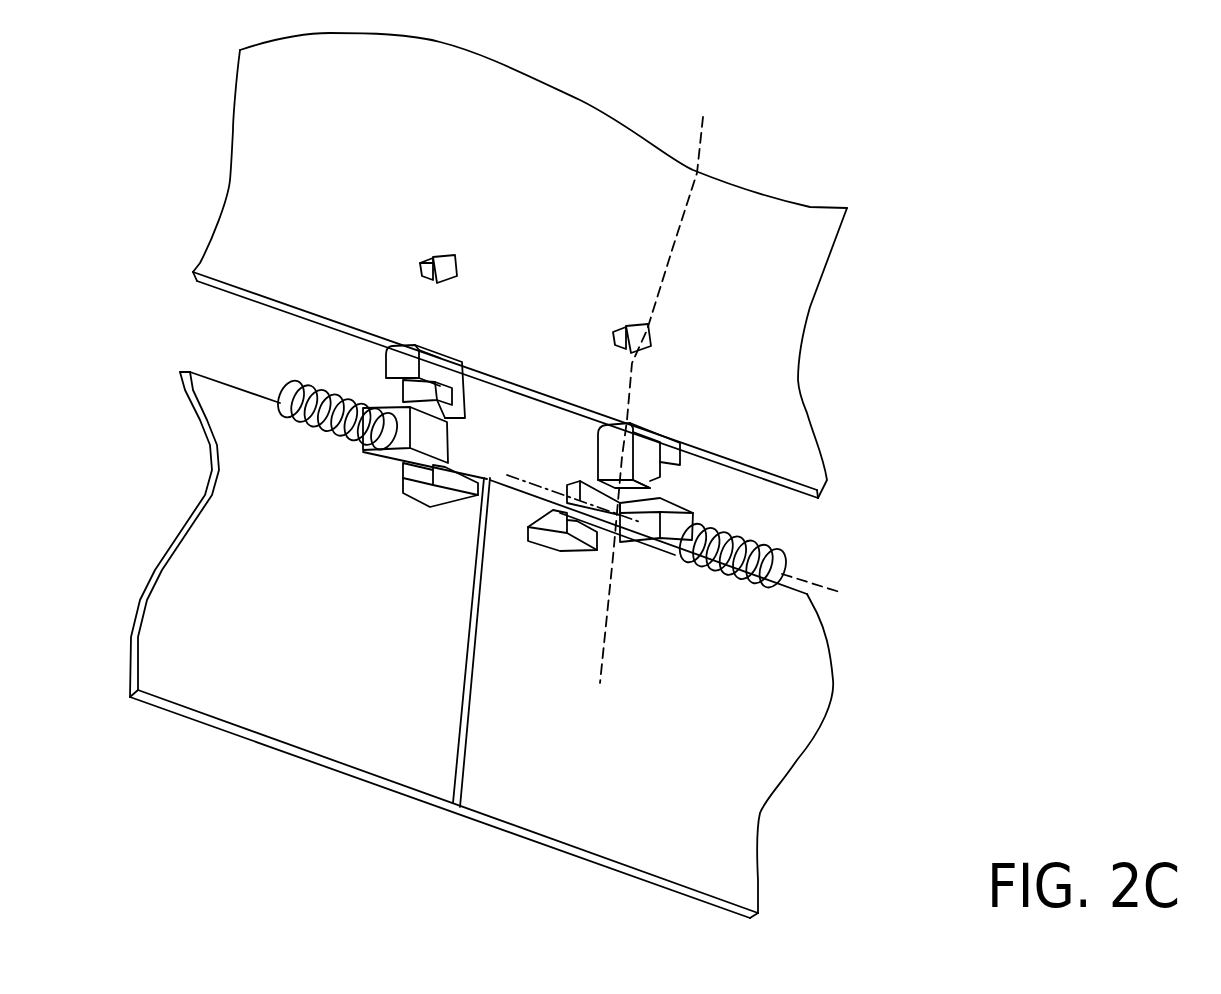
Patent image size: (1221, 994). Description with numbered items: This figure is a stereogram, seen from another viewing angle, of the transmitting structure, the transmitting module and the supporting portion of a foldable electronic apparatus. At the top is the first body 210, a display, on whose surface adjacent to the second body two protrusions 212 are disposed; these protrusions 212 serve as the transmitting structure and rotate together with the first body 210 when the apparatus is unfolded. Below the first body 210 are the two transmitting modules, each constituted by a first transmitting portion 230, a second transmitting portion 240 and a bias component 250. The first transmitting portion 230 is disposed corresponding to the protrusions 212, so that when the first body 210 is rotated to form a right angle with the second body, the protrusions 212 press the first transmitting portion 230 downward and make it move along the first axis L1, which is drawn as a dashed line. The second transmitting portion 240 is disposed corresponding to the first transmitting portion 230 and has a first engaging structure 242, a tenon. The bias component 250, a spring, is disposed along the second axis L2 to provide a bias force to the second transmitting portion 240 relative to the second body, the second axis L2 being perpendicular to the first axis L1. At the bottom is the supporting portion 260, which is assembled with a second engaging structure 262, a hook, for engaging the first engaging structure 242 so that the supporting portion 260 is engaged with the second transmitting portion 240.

The first body 210 is at (797, 305).
The protrusion 212 is at (573, 218).
The first transmitting portion 230 is at (687, 450).
The second transmitting portion 240 is at (690, 513).
The first engaging structure 242 is at (577, 500).
The bias component 250 is at (733, 560).
The supporting portion 260 is at (740, 810).
The second engaging structure 262 is at (587, 535).
The first axis L1 is at (647, 421).
The second axis L2 is at (831, 598).